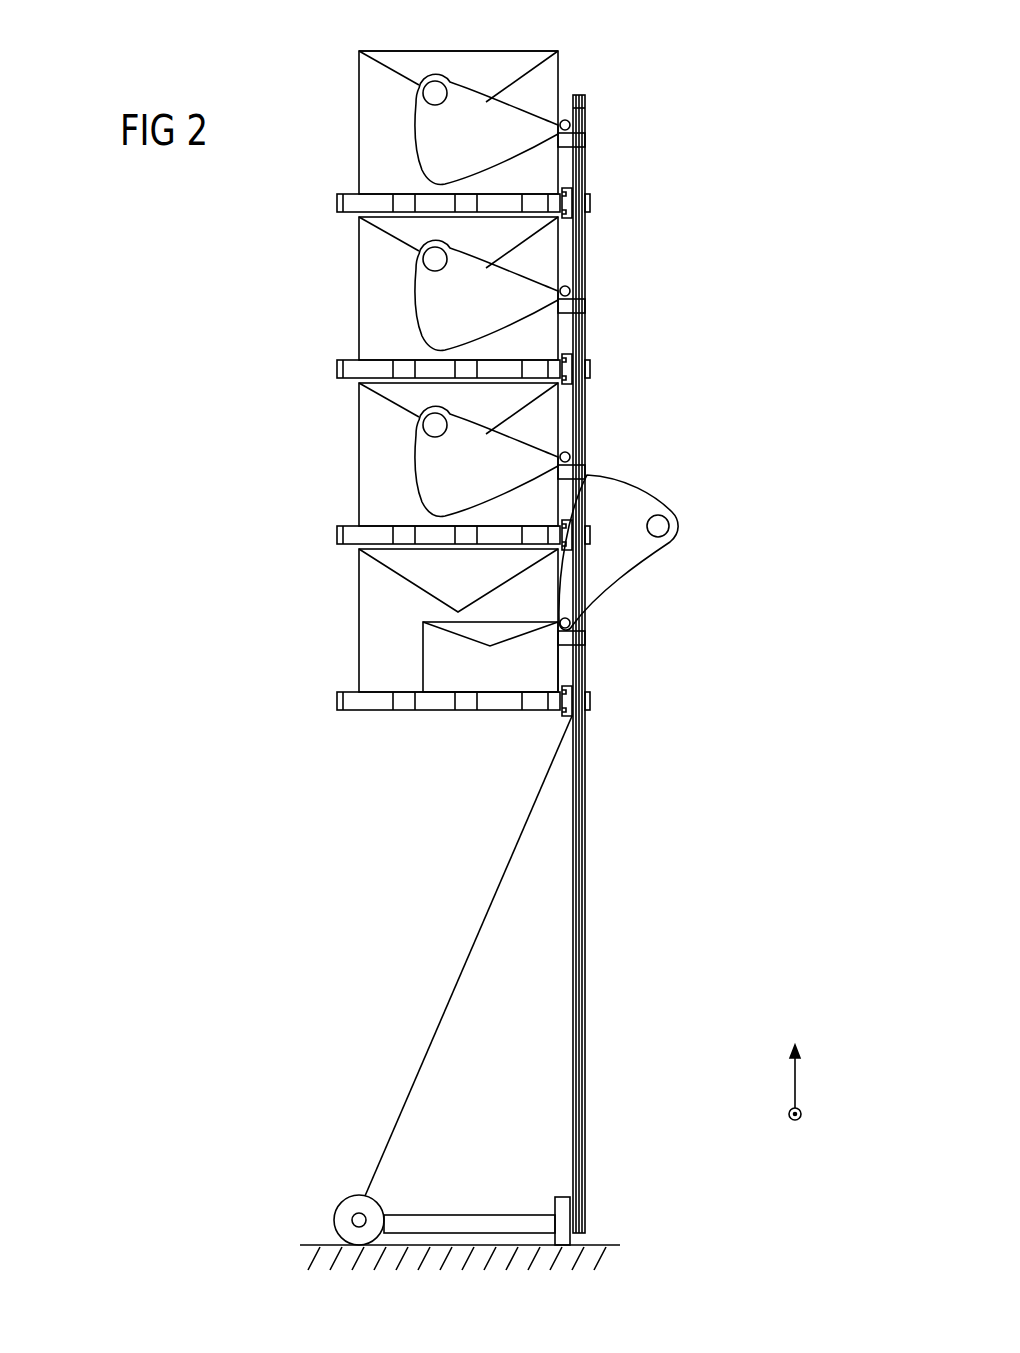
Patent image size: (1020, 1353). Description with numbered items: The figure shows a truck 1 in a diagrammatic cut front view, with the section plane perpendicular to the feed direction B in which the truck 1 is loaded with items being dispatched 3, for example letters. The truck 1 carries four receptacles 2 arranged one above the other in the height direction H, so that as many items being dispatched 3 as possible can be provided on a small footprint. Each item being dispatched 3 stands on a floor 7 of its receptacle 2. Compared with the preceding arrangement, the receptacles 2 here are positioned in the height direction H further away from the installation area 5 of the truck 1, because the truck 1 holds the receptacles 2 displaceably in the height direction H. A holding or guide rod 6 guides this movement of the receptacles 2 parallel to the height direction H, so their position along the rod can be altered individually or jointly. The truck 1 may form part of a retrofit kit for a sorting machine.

The truck 1 is at (370, 644).
The receptacle 2 is at (352, 124).
The item being dispatched 3 is at (397, 51).
The installation area 5 is at (318, 1245).
The holding or guide rod 6 is at (583, 400).
The floor 7 is at (350, 193).
The height direction H is at (793, 1072).
The feed direction B is at (797, 1122).